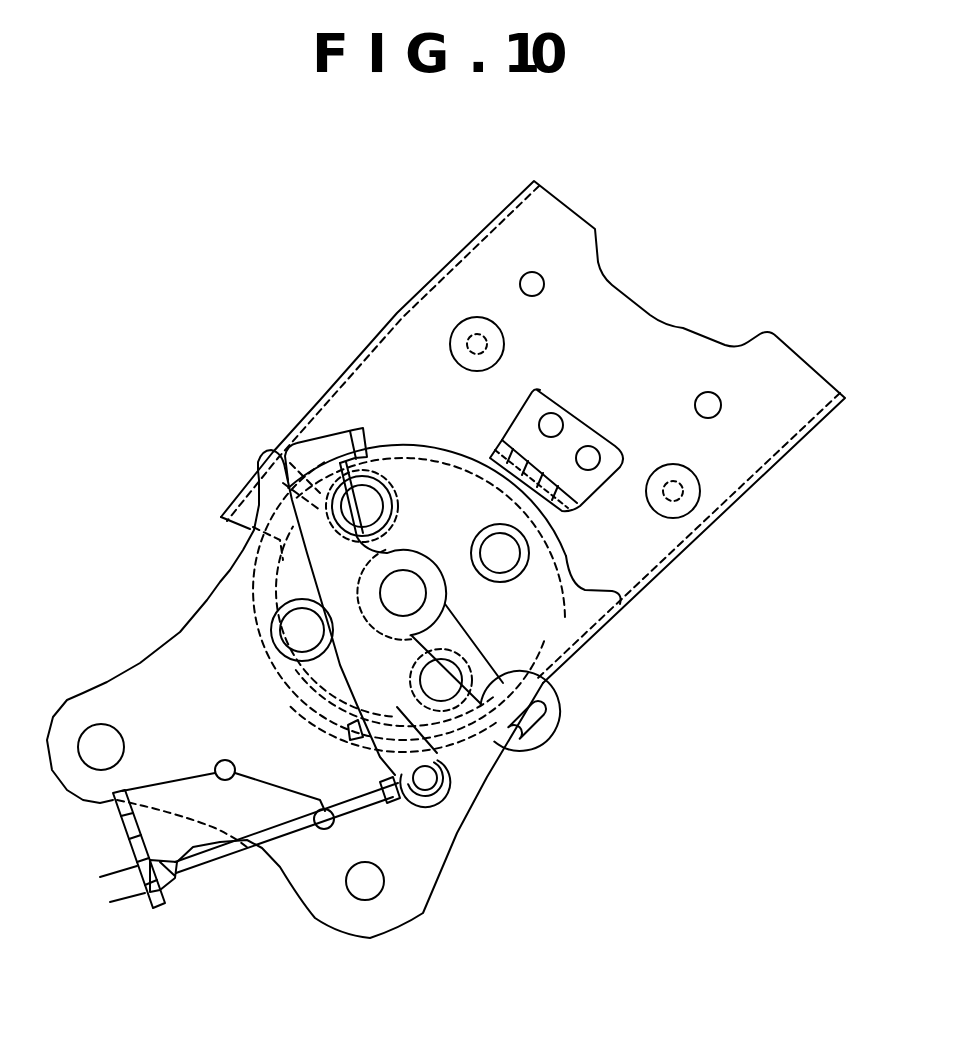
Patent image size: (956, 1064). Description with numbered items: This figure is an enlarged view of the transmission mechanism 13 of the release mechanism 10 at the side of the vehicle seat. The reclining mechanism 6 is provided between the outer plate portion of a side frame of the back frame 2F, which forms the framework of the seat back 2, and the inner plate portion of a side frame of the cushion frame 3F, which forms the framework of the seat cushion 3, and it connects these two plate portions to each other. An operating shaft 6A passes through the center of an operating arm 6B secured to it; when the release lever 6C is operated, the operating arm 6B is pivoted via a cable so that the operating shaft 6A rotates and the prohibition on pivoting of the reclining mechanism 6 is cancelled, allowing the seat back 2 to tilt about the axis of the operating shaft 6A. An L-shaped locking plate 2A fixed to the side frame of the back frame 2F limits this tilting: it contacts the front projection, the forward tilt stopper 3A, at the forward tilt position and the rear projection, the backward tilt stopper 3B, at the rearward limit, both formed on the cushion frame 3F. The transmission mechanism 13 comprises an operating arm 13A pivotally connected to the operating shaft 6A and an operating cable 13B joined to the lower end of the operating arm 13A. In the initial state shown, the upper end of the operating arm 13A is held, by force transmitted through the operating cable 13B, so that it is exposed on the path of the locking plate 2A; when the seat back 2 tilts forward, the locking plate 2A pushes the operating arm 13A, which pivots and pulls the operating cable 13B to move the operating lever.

The back frame 2F is at (533, 432).
The seat back 2 is at (418, 333).
The locking plate 2A is at (540, 470).
The cushion frame 3F is at (295, 703).
The seat cushion 3 is at (140, 690).
The forward tilt stopper 3A is at (273, 477).
The backward tilt stopper 3B is at (606, 611).
The reclining mechanism 6 is at (533, 621).
The operating shaft 6A is at (403, 593).
The operating arm 6B is at (581, 677).
The release lever 6C is at (497, 678).
The transmission mechanism 13 is at (416, 828).
The release mechanism 10 is at (355, 828).
The operating arm 13A is at (455, 748).
The operating cable 13B is at (275, 830).